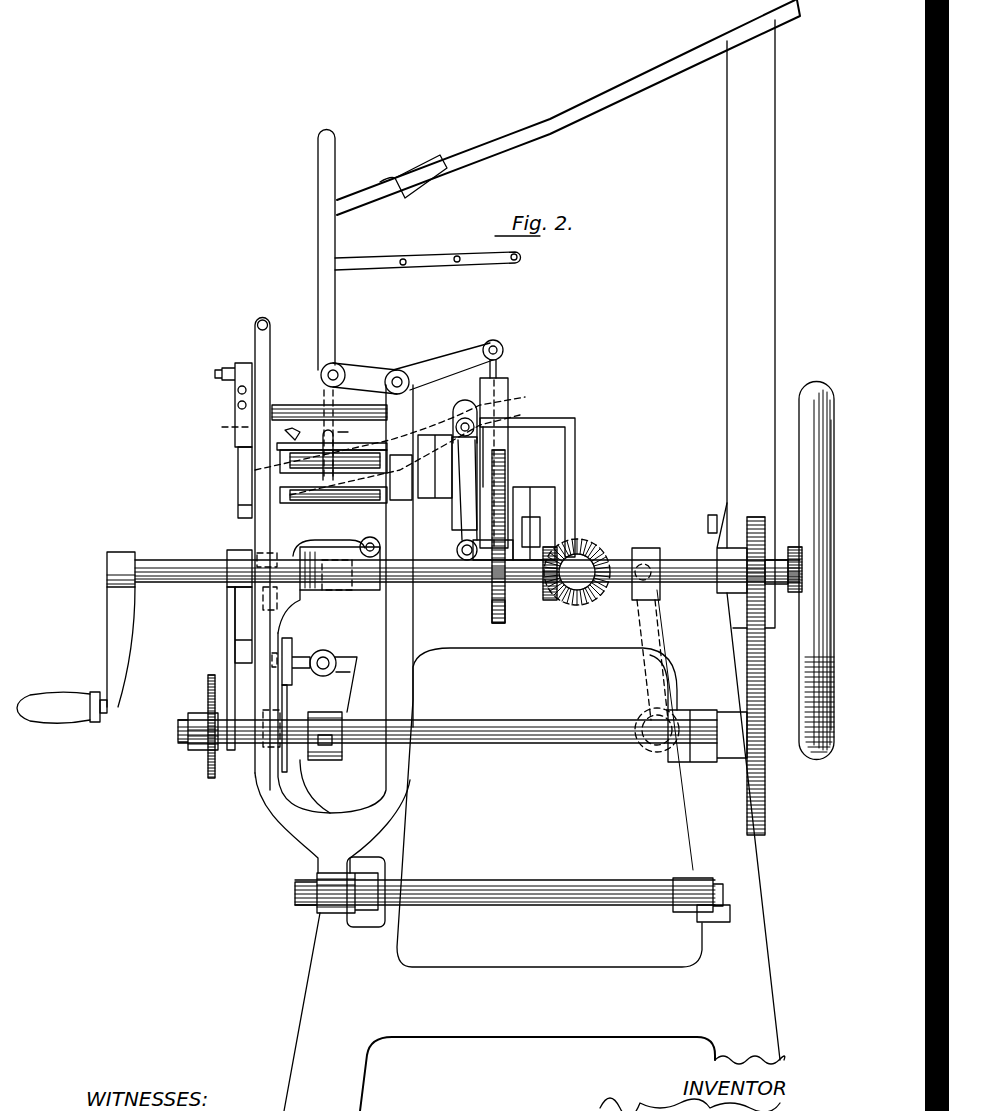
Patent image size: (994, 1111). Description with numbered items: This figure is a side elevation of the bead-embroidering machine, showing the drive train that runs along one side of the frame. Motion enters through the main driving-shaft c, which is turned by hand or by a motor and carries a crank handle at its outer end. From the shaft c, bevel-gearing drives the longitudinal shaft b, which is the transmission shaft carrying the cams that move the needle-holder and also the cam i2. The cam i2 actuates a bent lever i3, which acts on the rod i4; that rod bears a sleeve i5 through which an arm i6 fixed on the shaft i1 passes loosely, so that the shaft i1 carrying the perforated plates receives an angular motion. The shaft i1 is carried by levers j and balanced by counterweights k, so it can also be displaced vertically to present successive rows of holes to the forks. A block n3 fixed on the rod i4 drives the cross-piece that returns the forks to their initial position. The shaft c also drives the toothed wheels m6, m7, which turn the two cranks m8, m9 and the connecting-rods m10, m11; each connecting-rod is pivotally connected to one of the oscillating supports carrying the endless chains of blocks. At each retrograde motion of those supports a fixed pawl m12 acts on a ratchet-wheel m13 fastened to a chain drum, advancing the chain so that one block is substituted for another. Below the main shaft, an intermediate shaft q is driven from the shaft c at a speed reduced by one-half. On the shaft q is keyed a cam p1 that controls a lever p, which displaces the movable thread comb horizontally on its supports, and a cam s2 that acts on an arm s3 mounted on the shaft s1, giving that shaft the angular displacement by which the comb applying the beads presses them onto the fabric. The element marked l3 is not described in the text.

The main driving-shaft c is at (175, 565).
The fixed pawl m12 is at (240, 398).
The ratchet-wheel m13 is at (248, 492).
The block n3 is at (329, 454).
The sleeve i5 is at (319, 450).
The arm i6 is at (346, 429).
The shaft i1 is at (345, 372).
The lever j is at (447, 368).
The counterweight k is at (494, 463).
The bent lever i3 is at (512, 412).
The rod i4 is at (413, 432).
The connecting-rod m10 is at (430, 480).
The crank m8 is at (448, 497).
The toothed wheel m7 is at (507, 463).
The toothed wheel m6 is at (507, 620).
The connecting-rod m11 is at (578, 437).
The crank m9 is at (545, 505).
The bevel pinion l3 is at (560, 520).
The longitudinal shaft b is at (590, 545).
The cam i2 is at (613, 550).
The intermediate shaft q is at (492, 720).
The lever p is at (230, 613).
The cam p1 is at (210, 688).
The arm s3 is at (290, 655).
The shaft s1 is at (327, 659).
The cam s2 is at (288, 700).